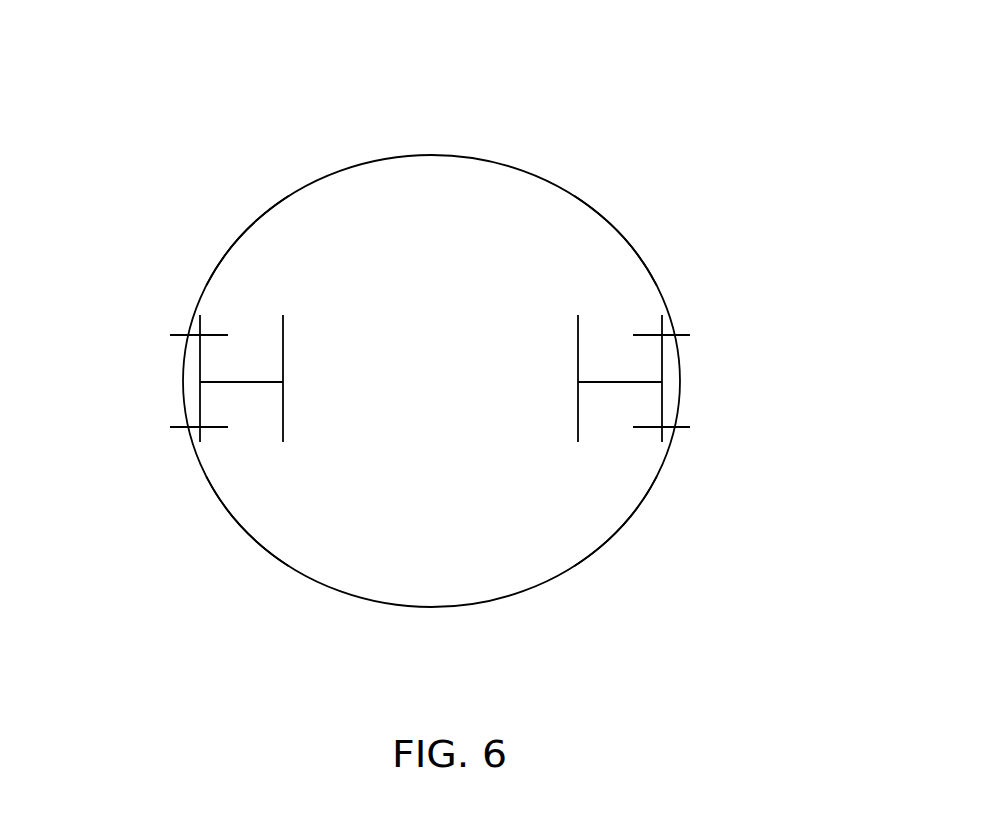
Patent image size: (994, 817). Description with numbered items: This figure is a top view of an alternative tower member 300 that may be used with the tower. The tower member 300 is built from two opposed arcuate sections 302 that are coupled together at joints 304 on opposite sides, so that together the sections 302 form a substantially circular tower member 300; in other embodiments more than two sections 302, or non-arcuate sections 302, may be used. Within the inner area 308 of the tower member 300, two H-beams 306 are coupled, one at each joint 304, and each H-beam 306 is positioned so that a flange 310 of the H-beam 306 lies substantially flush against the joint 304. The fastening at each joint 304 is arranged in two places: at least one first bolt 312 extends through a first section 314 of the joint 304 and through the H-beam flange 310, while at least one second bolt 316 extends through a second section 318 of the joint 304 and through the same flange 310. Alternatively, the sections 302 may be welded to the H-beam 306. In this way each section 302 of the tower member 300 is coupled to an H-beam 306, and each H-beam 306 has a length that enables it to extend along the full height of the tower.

The tower member 300 is at (553, 76).
The arcuate section 302 is at (538, 178).
The joint 304 is at (434, 377).
The H-beam 306 is at (274, 457).
The inner area 308 is at (455, 378).
The flange 310 is at (199, 326).
The first bolt 312 is at (172, 334).
The first section 314 is at (225, 255).
The second bolt 316 is at (178, 428).
The second section 318 is at (222, 510).